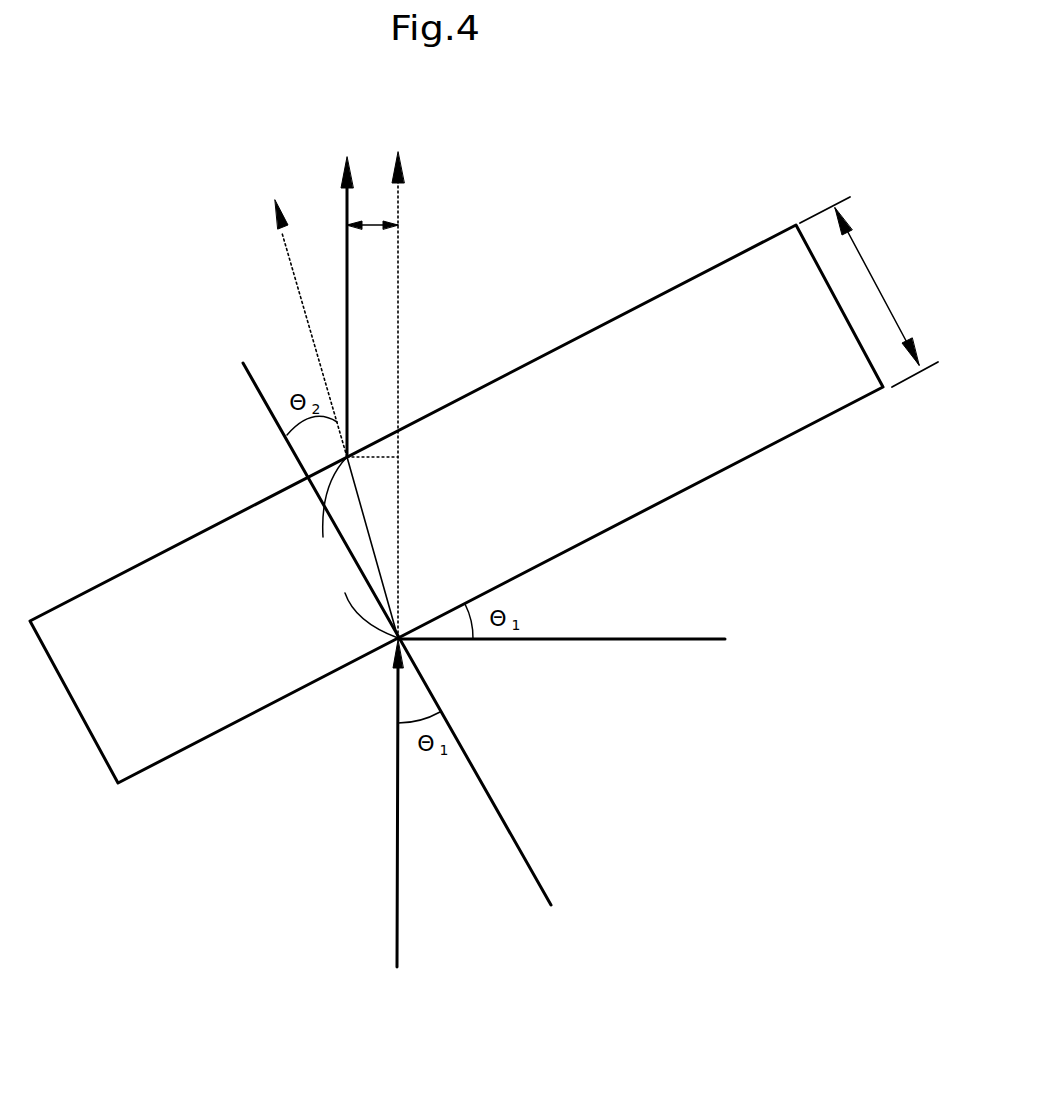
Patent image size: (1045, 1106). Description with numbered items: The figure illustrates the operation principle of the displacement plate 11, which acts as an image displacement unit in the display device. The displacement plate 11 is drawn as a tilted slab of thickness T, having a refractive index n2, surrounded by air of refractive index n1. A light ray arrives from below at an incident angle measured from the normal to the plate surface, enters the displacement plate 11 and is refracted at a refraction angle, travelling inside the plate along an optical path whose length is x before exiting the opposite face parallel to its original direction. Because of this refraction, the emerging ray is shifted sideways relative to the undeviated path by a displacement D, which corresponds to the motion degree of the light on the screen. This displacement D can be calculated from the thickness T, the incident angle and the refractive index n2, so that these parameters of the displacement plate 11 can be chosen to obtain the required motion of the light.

The displacement plate 11 is at (568, 372).
The refractive index of air n1 is at (270, 803).
The refractive index of the displacement plate n2 is at (257, 599).
The motion degree of the light D is at (372, 210).
The thickness of the displacement plate T is at (869, 292).
The length of the optical path of the refracted light x is at (360, 547).